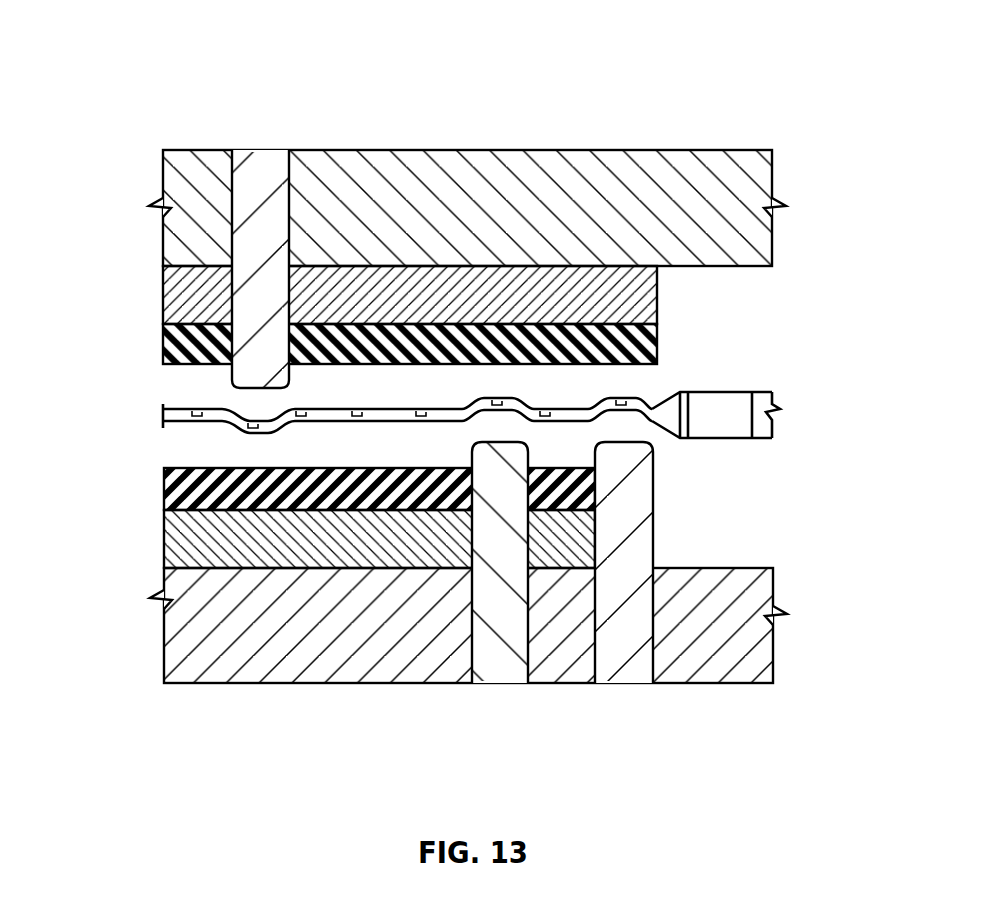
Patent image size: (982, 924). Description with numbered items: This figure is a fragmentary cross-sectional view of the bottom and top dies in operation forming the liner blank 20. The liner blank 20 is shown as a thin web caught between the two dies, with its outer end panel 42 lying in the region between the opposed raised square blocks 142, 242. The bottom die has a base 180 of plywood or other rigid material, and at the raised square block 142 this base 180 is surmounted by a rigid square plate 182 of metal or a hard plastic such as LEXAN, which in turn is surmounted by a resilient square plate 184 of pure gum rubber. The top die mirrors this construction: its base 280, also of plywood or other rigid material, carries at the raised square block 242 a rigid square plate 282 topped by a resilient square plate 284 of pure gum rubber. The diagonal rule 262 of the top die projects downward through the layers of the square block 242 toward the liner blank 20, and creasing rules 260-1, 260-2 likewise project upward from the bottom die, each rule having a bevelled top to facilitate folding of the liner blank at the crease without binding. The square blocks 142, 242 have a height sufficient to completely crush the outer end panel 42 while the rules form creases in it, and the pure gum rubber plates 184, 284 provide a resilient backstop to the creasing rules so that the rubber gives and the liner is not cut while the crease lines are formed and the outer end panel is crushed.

The raised square block 242 is at (392, 146).
The base 280 is at (722, 268).
The rigid square plate 282 is at (163, 300).
The resilient square plate 284 is at (163, 351).
The diagonal rule 262 is at (290, 381).
The outer end panel 42 is at (398, 410).
The liner blank 20 is at (722, 391).
The second lower standoff pin 260-2 is at (470, 452).
The first lower standoff pin 260-1 is at (598, 450).
The resilient square plate 184 is at (164, 492).
The rigid square plate 182 is at (164, 540).
The base 180 is at (700, 566).
The raised square block 142 is at (242, 694).